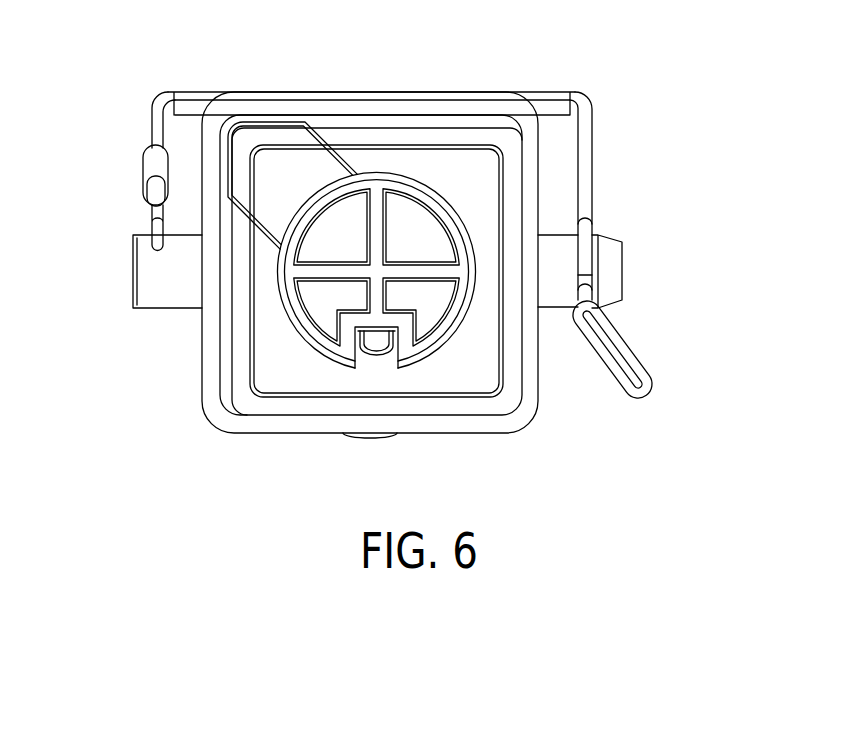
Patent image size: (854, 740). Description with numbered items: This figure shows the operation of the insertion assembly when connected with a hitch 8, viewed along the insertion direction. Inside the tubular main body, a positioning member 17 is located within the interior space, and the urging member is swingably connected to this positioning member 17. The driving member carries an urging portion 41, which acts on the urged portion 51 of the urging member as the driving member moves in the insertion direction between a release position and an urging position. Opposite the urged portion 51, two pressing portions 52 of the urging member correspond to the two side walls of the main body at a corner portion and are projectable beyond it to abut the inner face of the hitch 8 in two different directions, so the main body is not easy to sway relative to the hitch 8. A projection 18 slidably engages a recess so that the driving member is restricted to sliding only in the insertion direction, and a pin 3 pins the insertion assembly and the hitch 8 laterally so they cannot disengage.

The pin 3 is at (155, 292).
The hitch 8 is at (418, 98).
The positioning member 17 is at (475, 368).
The projection 18 is at (380, 355).
The urging portion 41 is at (450, 202).
The urged portion 51 is at (323, 187).
The pressing portions 52 is at (266, 98).